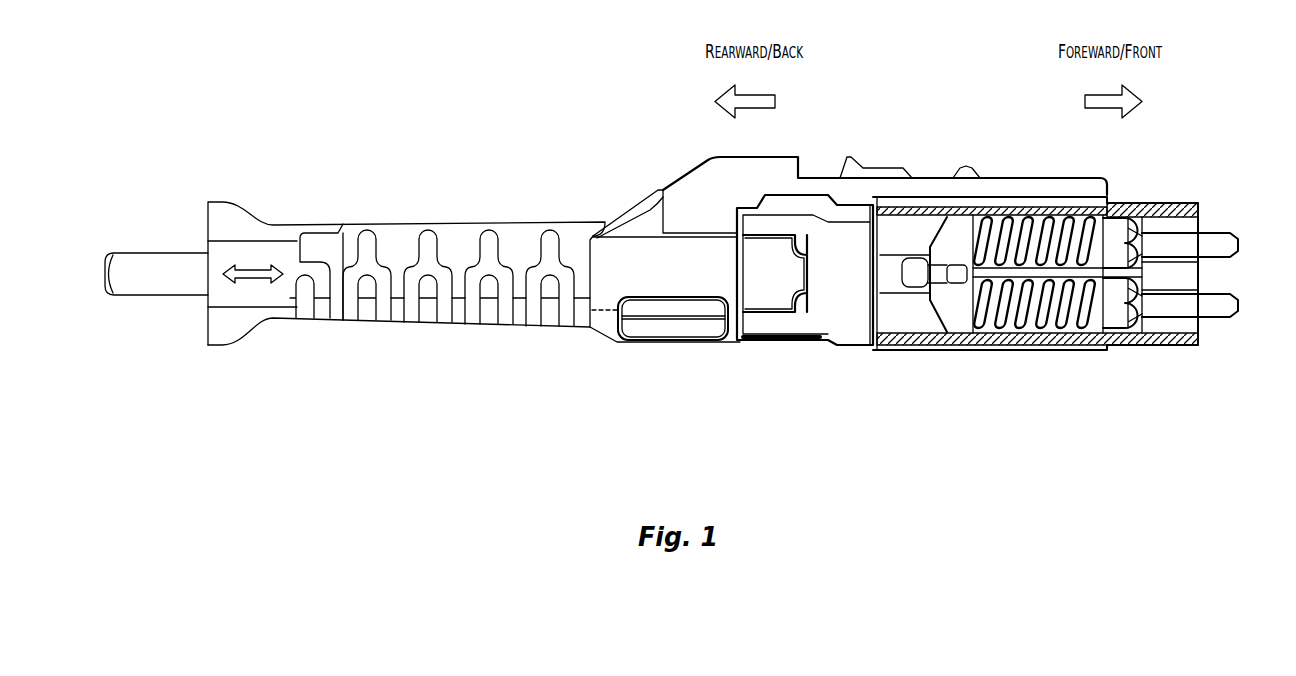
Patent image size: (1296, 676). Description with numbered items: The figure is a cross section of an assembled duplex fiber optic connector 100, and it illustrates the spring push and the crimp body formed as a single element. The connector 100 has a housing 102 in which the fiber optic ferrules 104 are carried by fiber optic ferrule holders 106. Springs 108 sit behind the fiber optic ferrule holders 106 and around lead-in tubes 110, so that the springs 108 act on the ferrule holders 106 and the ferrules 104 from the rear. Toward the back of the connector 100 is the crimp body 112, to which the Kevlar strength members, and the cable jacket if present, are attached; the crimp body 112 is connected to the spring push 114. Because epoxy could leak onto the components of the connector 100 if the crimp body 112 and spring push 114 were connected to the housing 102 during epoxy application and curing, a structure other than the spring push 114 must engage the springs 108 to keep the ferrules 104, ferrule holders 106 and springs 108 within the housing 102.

The fiber optic connector 100 is at (968, 102).
The housing 102 is at (1158, 343).
The fiber optic ferrules 104 is at (1238, 245).
The fiber optic ferrule holders 106 is at (1115, 315).
The springs 108 is at (1049, 350).
The lead-in tubes 110 is at (990, 345).
The crimp body 112 is at (847, 350).
The spring push 114 is at (943, 307).